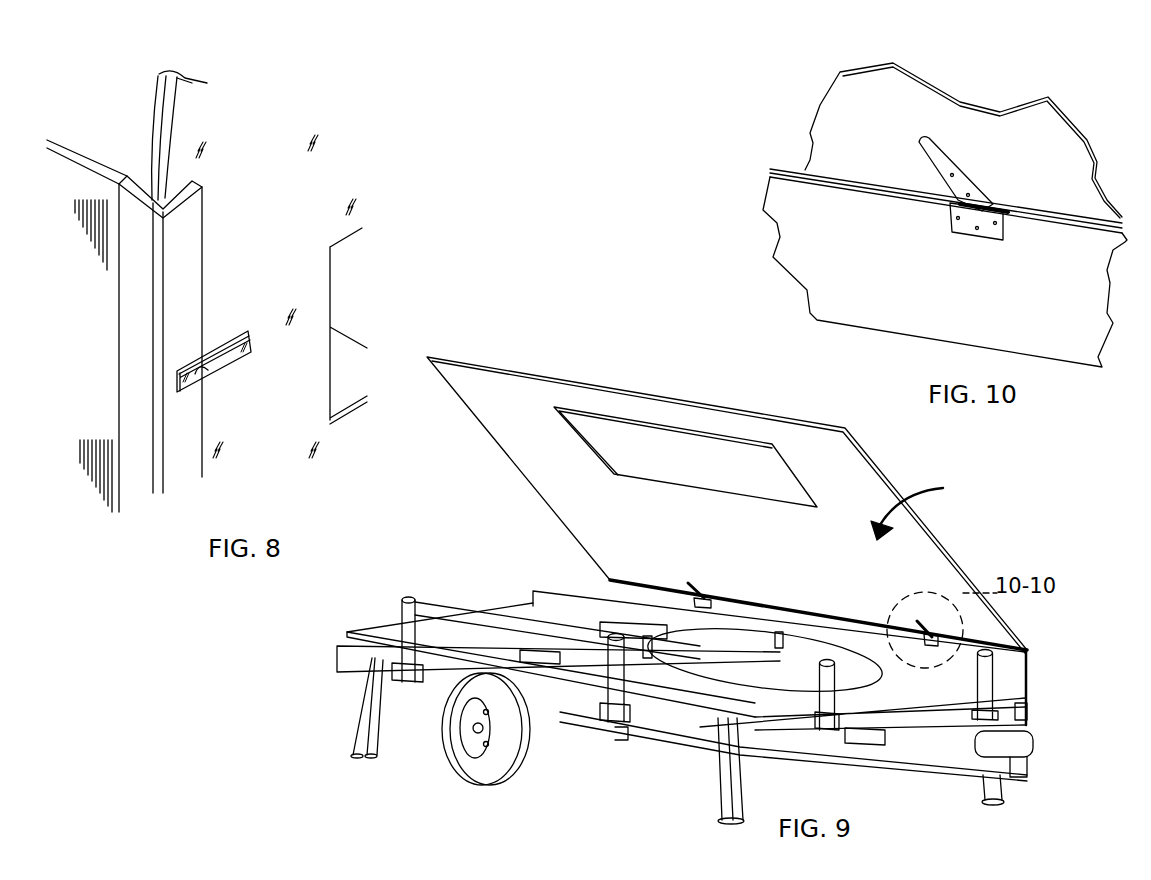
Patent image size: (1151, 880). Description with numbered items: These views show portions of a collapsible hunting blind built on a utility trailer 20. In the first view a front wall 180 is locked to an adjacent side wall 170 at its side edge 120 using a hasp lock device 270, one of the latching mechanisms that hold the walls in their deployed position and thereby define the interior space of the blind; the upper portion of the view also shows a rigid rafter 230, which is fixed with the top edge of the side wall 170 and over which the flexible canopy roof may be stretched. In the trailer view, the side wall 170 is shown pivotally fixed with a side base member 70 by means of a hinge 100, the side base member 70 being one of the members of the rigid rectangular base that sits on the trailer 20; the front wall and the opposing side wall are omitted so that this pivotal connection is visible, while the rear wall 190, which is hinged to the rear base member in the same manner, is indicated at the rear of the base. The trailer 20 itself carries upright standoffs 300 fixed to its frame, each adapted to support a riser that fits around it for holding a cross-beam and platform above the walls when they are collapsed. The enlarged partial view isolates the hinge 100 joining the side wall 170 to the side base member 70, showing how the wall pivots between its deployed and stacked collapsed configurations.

In FIG. 9, the utility trailer 20 is at (614, 763).
In FIG. 10, the side base member 70 is at (897, 287).
In FIG. 9, the side base member 70 is at (1007, 672).
In FIG. 10, the hinge 100 is at (960, 188).
In FIG. 9, the hinge 100 is at (697, 598).
In FIG. 8, the side edge 120 is at (168, 402).
In FIG. 8, the side wall 170 is at (78, 342).
In FIG. 10, the side wall 170 is at (887, 157).
In FIG. 9, the side wall 170 is at (520, 457).
In FIG. 8, the front wall 180 is at (232, 422).
In FIG. 9, the rear wall 190 is at (501, 586).
In FIG. 8, the rafter 230 is at (188, 96).
In FIG. 8, the hasp lock device 270 is at (213, 346).
In FIG. 9, the upright standoff 300 is at (408, 683).